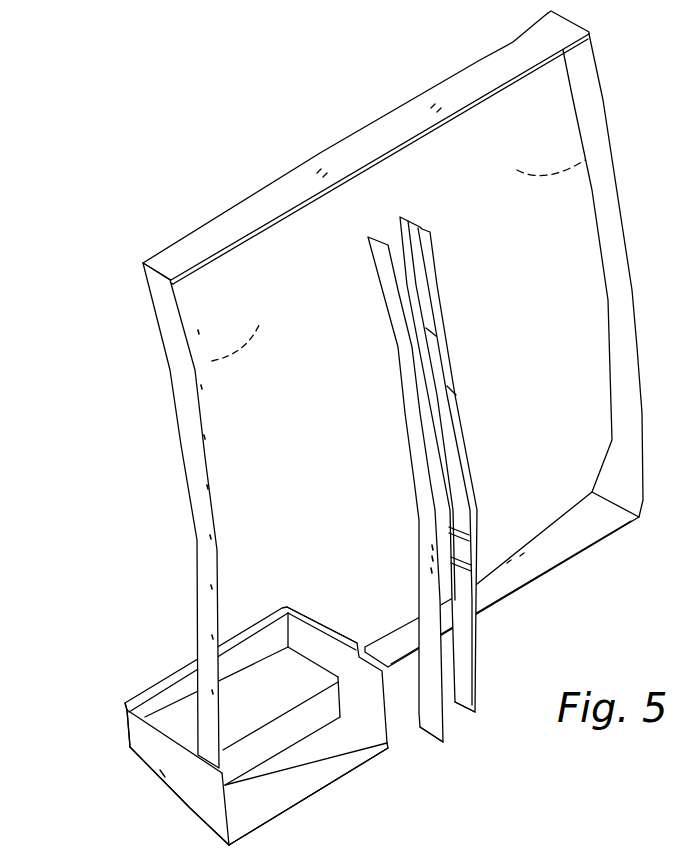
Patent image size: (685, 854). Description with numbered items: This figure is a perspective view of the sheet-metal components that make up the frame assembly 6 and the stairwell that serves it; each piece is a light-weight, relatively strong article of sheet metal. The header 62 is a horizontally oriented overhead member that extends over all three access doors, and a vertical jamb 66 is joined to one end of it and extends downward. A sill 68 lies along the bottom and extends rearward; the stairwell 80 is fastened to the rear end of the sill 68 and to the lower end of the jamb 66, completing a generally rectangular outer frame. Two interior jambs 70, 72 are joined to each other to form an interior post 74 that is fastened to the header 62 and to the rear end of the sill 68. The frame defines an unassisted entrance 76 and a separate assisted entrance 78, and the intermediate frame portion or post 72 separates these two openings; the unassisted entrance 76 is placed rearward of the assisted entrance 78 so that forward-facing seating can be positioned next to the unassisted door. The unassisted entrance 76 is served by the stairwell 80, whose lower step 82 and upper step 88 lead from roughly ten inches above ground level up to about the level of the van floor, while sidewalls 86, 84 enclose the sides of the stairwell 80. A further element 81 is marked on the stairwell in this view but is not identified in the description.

The door frame 6 is at (628, 218).
The header 62 is at (340, 141).
The jamb 66 is at (175, 515).
The sill 68 is at (562, 568).
The interior jamb 70 is at (403, 492).
The interior jamb 72 is at (426, 246).
The interior post 74 is at (495, 735).
The unassisted entrance 76 is at (212, 361).
The assisted entrance 78 is at (585, 160).
The stairwell 80 is at (226, 709).
The opening 81 is at (174, 779).
The lower step 82 is at (286, 773).
The sidewall 84 is at (168, 785).
The sidewall 86 is at (332, 626).
The upper step 88 is at (188, 722).